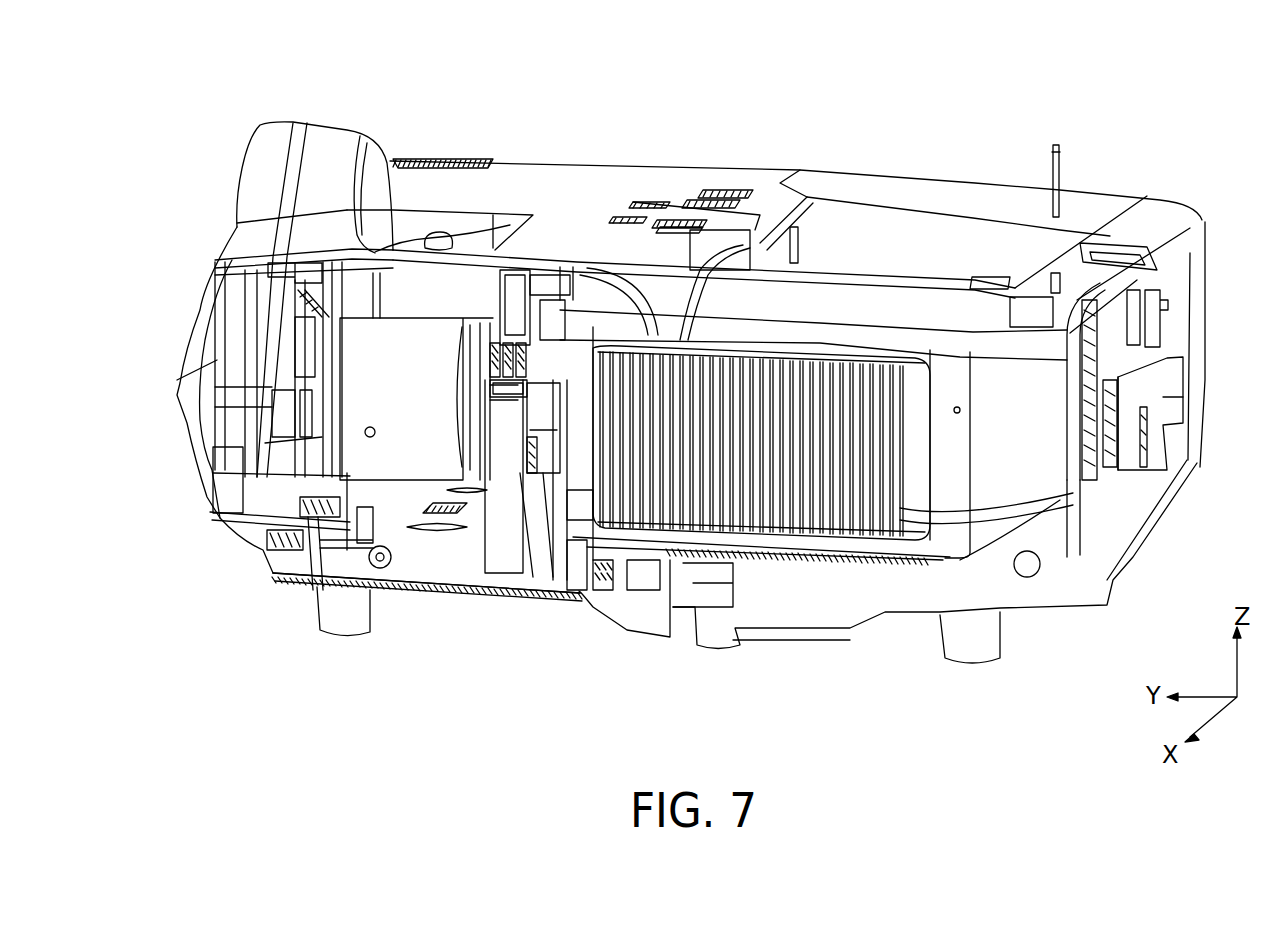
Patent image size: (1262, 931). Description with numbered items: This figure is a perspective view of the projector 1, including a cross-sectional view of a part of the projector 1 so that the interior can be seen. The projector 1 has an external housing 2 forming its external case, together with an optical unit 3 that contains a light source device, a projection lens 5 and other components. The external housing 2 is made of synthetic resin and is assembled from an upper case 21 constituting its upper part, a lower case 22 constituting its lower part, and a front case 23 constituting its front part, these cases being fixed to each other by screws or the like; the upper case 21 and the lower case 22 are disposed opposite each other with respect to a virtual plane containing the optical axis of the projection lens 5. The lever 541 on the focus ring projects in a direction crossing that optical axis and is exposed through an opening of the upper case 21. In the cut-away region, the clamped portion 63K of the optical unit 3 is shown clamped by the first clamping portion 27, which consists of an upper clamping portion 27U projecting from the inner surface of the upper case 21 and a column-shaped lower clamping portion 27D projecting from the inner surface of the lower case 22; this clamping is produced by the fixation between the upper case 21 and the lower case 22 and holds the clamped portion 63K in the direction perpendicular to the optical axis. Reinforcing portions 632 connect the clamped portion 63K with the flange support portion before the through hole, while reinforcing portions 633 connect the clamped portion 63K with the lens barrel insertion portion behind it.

The projector 1 is at (969, 104).
The external housing 2 is at (645, 406).
The upper case 21 is at (578, 168).
The lower case 22 is at (786, 617).
The front case 23 is at (185, 423).
The lever 541 is at (445, 232).
The reinforcing portions 633 is at (540, 262).
The reinforcing portions 632 is at (497, 362).
The clamped portion 63K is at (490, 388).
The first clamping portion 27 is at (466, 487).
The upper clamping portion 27U is at (480, 348).
The lower clamping portion 27D is at (500, 557).
The projection lens 5 is at (432, 485).
The optical unit 3 is at (481, 499).